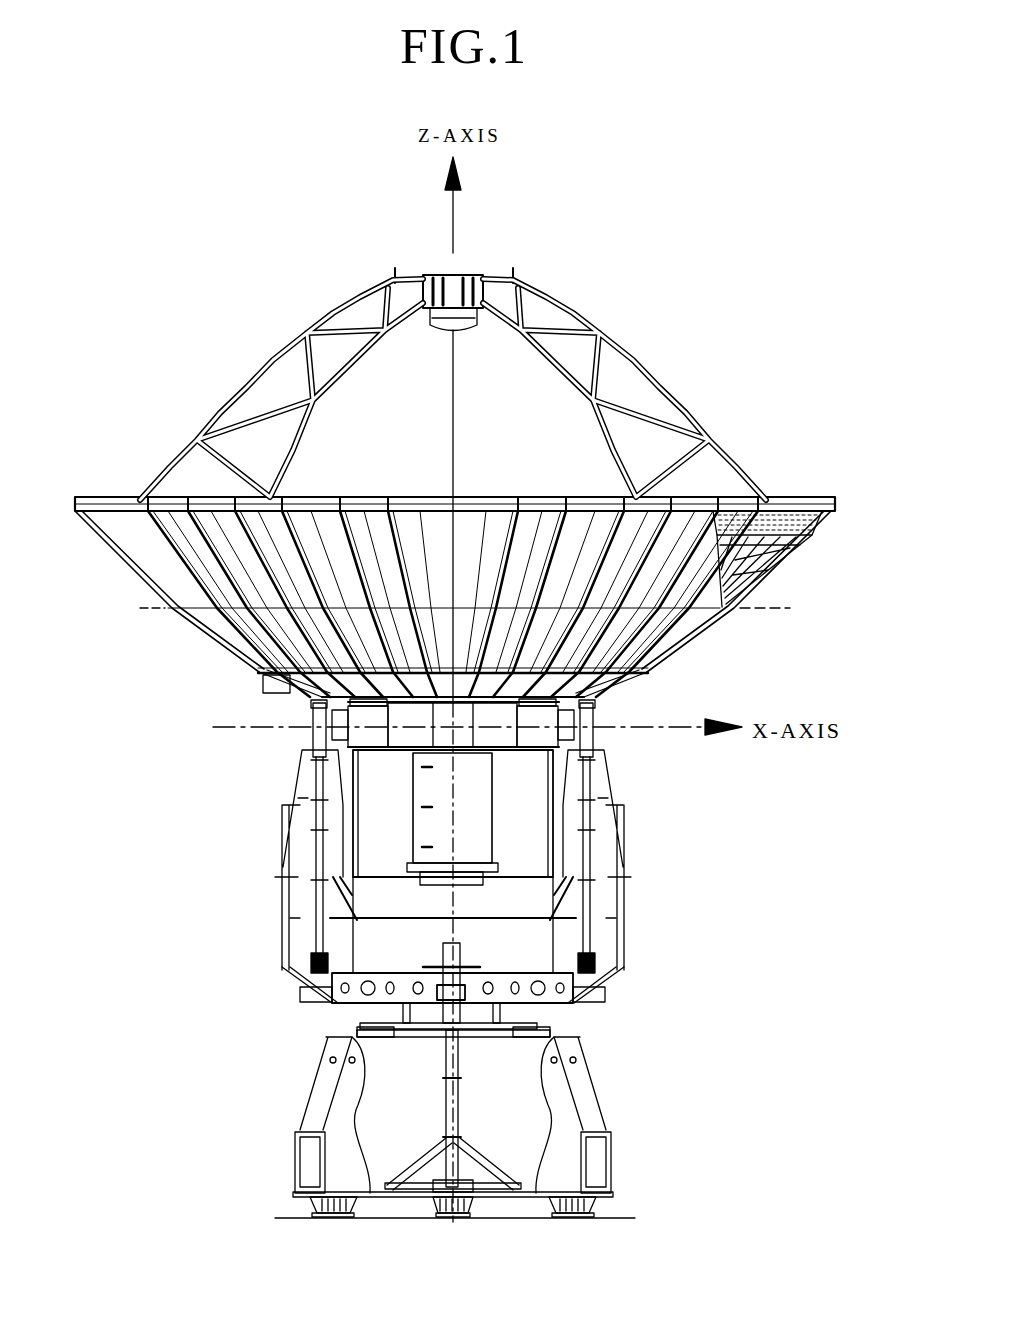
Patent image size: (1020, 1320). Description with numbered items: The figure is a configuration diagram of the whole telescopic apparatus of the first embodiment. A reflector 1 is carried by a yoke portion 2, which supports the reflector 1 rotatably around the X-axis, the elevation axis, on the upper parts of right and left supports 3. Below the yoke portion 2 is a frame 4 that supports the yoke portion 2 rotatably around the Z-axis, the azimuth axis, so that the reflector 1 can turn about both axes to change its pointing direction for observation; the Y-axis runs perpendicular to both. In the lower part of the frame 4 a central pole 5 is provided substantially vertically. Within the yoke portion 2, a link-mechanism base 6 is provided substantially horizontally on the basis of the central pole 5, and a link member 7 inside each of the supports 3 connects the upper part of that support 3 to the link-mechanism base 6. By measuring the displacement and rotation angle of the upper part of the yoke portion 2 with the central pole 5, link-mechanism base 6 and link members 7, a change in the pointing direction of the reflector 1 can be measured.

The reflector 1 is at (680, 655).
The yoke portion 2 is at (627, 957).
The supports 3 is at (268, 737).
The frame 4 is at (603, 1115).
The central pole 5 is at (457, 1120).
The link-mechanism base 6 is at (565, 1008).
The link member 7 is at (305, 930).